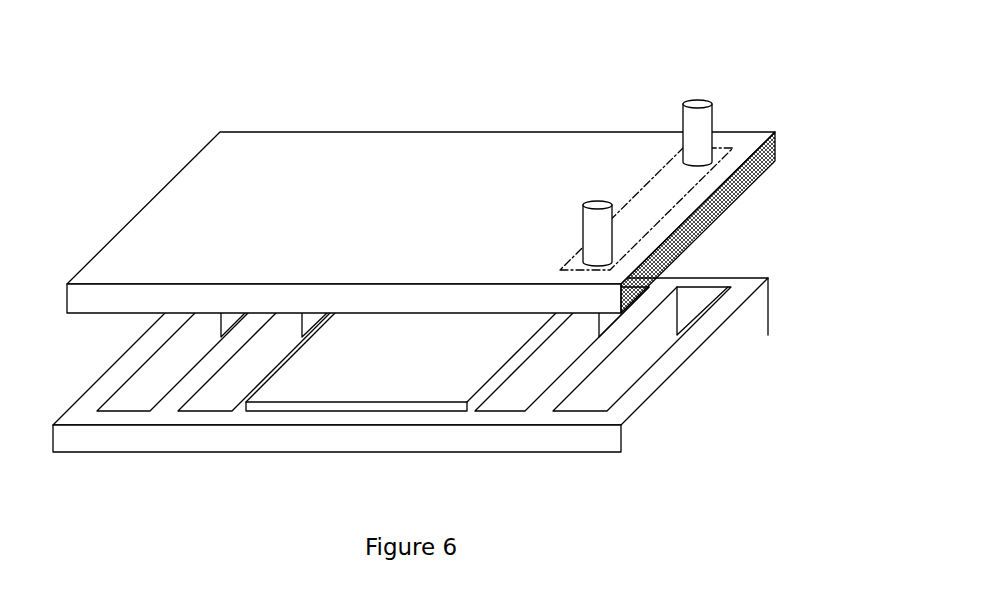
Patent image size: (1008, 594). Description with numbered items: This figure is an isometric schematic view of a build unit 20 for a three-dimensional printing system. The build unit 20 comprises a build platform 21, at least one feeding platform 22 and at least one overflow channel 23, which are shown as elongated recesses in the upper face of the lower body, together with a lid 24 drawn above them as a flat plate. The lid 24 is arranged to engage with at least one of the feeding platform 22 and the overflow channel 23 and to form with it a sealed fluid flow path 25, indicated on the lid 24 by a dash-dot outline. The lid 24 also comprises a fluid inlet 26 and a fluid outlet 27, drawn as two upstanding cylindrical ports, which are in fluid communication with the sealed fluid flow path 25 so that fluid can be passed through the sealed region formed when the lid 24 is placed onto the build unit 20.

The build unit 20 is at (770, 295).
The build platform 21 is at (295, 378).
The feeding platform 22 is at (513, 387).
The overflow channel 23 is at (639, 356).
The lid 24 is at (497, 131).
The sealed fluid flow path 25 is at (672, 188).
The fluid inlet 26 is at (712, 133).
The fluid outlet 27 is at (580, 217).